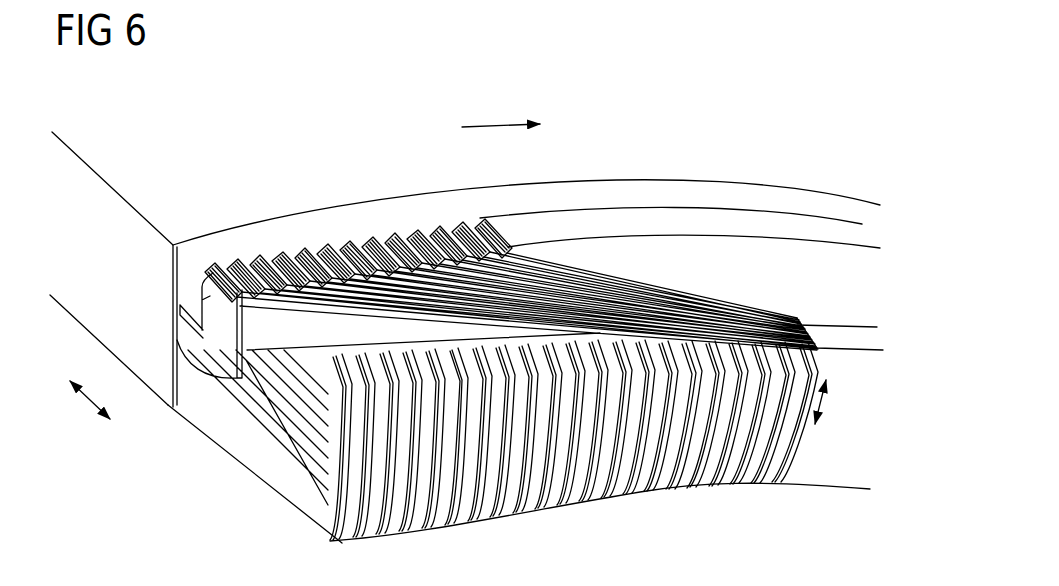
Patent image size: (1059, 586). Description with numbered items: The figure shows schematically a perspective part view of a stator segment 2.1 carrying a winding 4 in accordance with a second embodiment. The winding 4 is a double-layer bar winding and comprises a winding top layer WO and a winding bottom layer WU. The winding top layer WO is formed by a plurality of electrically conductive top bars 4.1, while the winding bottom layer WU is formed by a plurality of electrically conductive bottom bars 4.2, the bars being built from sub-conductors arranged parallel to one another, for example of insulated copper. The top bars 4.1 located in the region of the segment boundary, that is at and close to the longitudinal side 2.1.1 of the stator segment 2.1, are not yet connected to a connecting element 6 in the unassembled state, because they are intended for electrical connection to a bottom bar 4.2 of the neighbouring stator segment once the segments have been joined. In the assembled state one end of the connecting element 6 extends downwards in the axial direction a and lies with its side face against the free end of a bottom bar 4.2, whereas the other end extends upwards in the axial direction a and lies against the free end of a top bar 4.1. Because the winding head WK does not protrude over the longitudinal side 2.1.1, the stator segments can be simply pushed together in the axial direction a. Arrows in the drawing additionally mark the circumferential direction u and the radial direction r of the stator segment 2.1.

The longitudinal side 2.1.1 is at (100, 210).
The stator segment 2.1 is at (408, 180).
The winding 4 is at (688, 292).
The top bars 4.1 is at (567, 487).
The bottom bars 4.2 is at (213, 293).
The connecting element 6 is at (345, 335).
The winding head WK is at (613, 268).
The winding bottom layer WU is at (215, 352).
The winding top layer WO is at (318, 500).
The circumferential direction u is at (501, 109).
The axial direction a is at (90, 405).
The radial direction r is at (826, 402).